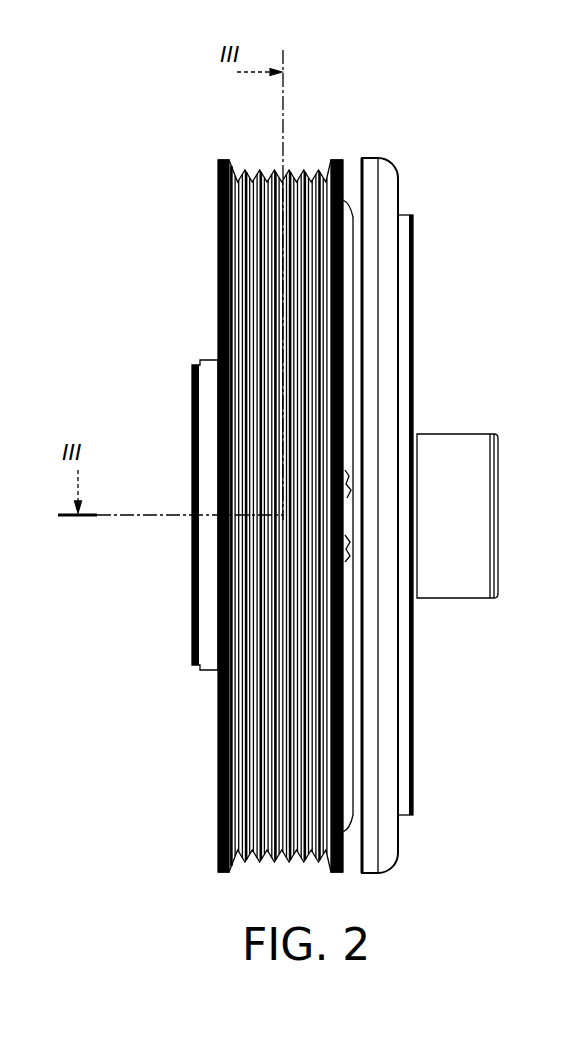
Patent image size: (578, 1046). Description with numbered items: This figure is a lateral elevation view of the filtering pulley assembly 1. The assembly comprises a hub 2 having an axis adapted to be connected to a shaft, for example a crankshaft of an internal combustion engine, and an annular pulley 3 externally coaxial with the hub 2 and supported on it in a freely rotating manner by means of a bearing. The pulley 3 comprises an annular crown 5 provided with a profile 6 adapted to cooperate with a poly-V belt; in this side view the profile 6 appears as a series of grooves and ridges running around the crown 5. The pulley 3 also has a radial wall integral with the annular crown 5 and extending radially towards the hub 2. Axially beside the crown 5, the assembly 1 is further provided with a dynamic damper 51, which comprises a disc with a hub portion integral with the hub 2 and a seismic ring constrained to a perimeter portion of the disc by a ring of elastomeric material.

The filtering pulley assembly 1 is at (497, 232).
The hub 2 is at (462, 432).
The annular pulley 3 is at (248, 475).
The annular crown 5 is at (257, 303).
The profile 6 is at (313, 165).
The dynamic damper 51 is at (398, 160).